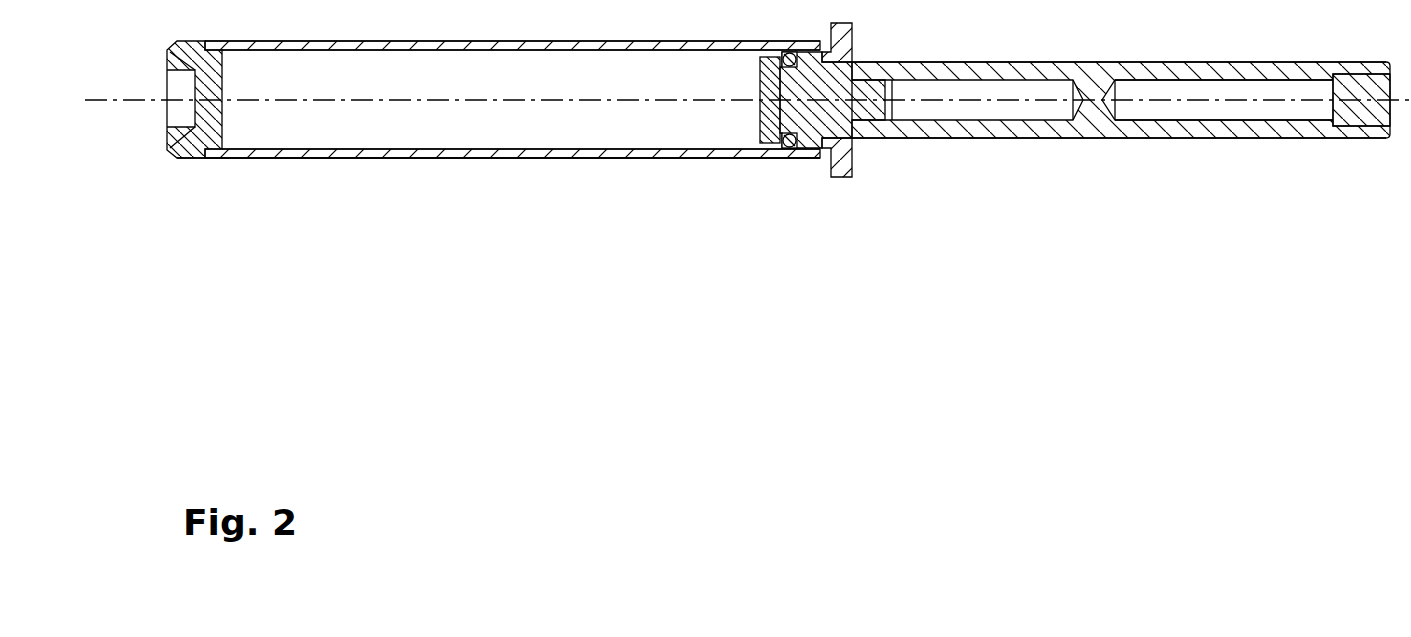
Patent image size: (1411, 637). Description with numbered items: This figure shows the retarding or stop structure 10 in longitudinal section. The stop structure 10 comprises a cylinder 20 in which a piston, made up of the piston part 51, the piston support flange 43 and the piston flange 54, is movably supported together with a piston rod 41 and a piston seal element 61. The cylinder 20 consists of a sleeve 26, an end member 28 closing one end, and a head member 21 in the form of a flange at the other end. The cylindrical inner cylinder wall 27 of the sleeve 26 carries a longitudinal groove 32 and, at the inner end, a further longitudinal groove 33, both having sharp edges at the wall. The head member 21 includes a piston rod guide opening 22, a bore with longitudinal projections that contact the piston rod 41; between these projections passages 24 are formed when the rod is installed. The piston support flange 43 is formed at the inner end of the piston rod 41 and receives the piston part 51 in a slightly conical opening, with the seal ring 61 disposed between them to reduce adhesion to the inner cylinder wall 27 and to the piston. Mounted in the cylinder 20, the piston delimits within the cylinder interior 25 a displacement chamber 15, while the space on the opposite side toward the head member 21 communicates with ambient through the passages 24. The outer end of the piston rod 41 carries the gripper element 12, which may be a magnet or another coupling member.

The stop structure 10 is at (575, 183).
The gripper element 12 is at (1362, 120).
The displacement chamber 15 is at (340, 125).
The cylinder 20 is at (653, 183).
The head member 21 is at (853, 160).
The piston rod guide opening 22 is at (1093, 221).
The passages 24 is at (835, 59).
The cylinder interior 25 is at (686, 85).
The sleeve 26 is at (387, 152).
The inner cylinder wall 27 is at (402, 48).
The end member 28 is at (213, 113).
The longitudinal groove 32 is at (521, 235).
The longitudinal groove 33 is at (245, 45).
The piston rod 41 is at (1167, 137).
The piston support flange 43 is at (825, 153).
The piston part 51 is at (772, 88).
The piston flange 54 is at (784, 145).
The piston seal element 61 is at (800, 148).